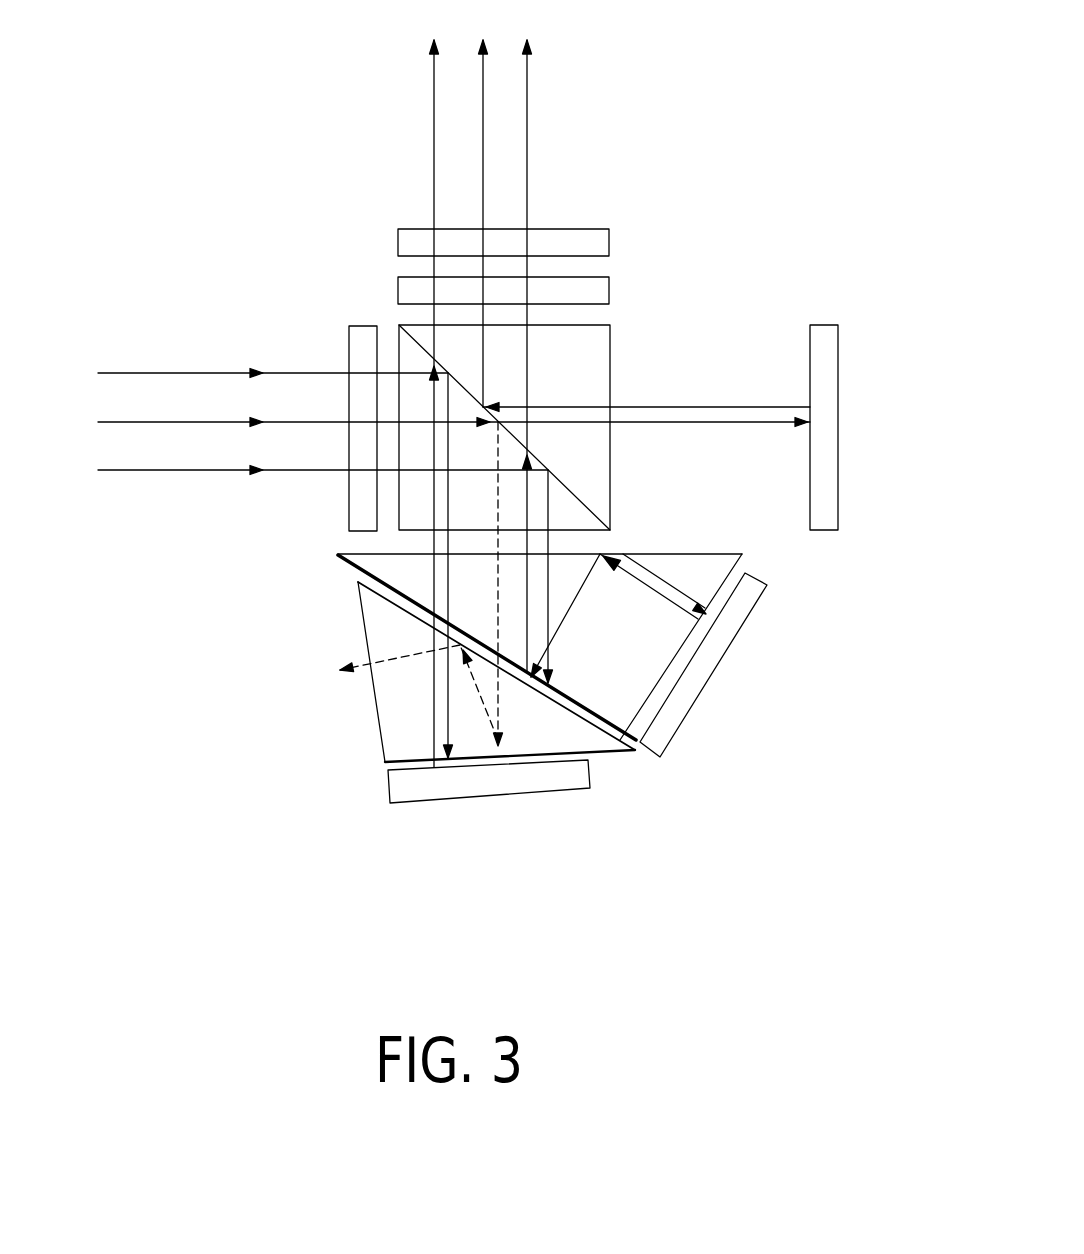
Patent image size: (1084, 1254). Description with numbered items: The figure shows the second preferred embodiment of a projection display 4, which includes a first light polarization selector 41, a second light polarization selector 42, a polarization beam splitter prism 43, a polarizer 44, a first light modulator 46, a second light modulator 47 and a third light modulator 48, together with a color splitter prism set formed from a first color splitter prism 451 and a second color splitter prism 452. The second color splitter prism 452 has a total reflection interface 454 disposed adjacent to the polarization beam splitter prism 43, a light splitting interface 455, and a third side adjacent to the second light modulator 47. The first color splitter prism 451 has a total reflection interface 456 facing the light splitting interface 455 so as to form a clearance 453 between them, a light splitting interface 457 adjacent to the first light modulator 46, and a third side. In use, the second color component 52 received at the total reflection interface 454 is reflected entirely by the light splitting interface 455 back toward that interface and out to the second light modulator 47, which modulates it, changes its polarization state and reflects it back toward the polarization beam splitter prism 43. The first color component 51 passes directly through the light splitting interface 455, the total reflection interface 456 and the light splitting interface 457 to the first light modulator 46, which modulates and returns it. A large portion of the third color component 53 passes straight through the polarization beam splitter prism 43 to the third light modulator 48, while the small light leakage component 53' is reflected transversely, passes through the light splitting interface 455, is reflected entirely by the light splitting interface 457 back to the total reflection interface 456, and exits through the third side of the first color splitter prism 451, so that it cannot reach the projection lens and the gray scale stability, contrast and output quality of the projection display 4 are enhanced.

The projection display 4 is at (677, 166).
The first light polarization selector 41 is at (357, 348).
The second light polarization selector 42 is at (405, 290).
The polarization beam splitter prism 43 is at (600, 482).
The polarizer 44 is at (405, 243).
The first light modulator 46 is at (527, 773).
The second light modulator 47 is at (703, 672).
The third light modulator 48 is at (832, 445).
The first color splitter prism 451 is at (392, 703).
The second color splitter prism 452 is at (633, 745).
The clearance 453 is at (533, 683).
The total reflection interface 454 is at (640, 554).
The light splitting interface 455 is at (620, 715).
The total reflection interface 456 is at (417, 612).
The light splitting interface 457 is at (473, 757).
The first color component 51 is at (434, 140).
The second color component 52 is at (527, 145).
The third color component 53 is at (452, 294).
The light leakage component 53' is at (380, 584).